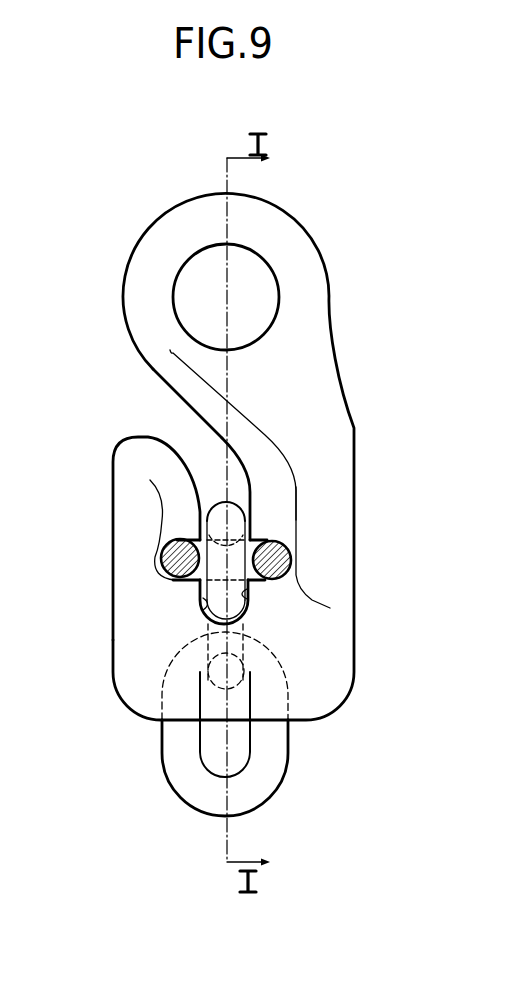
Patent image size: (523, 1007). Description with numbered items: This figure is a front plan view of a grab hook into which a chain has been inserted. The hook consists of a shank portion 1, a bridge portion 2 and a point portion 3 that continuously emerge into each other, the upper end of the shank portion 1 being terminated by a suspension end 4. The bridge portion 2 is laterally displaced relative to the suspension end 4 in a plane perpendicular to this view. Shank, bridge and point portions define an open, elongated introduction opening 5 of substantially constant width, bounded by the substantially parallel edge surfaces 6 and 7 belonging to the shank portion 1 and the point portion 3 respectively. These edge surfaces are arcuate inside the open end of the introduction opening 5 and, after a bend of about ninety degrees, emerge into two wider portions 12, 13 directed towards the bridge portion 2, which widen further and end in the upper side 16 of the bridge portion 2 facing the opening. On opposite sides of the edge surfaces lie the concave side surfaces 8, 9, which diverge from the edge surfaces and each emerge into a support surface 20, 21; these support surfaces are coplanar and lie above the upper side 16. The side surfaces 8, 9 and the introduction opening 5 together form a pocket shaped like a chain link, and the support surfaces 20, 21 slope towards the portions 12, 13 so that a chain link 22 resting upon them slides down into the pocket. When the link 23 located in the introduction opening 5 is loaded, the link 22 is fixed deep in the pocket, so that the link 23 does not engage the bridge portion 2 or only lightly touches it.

The shank portion 1 is at (327, 430).
The bridge portion 2 is at (208, 707).
The point portion 3 is at (128, 560).
The suspension end 4 is at (300, 289).
The introduction opening 5 is at (200, 470).
The edge surface 6 is at (250, 490).
The edge surface 7 is at (200, 511).
The side surface 8 is at (270, 523).
The side surface 9 is at (168, 541).
The wider portion 12 is at (247, 597).
The wider portion 13 is at (203, 603).
The upper side of the bridge portion 16 is at (233, 637).
The support surface 20 is at (285, 578).
The support surface 21 is at (193, 582).
The chain link 22 is at (291, 566).
The chain link 23 is at (229, 623).